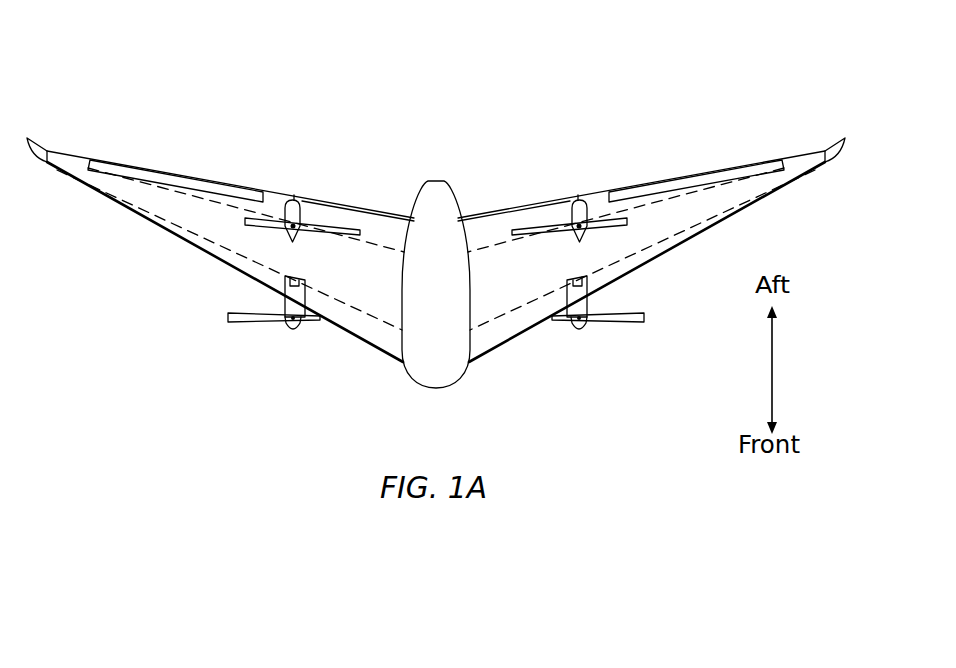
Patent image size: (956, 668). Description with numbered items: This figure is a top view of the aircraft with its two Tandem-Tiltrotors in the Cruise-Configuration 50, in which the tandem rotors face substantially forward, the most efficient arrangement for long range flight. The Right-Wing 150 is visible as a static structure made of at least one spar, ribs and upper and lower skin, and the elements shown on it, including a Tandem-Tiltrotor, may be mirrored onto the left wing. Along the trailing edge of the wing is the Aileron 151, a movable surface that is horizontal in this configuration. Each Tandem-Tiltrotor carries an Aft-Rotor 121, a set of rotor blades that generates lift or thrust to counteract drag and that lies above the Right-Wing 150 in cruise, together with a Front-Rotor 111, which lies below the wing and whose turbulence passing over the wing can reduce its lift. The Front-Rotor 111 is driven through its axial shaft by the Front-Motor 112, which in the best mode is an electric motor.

The Cruise-Configuration 50 is at (249, 63).
The Right-Wing 150 is at (153, 198).
The Aileron 151 is at (163, 171).
The Aft-Rotor 121 is at (345, 230).
The Front-Motor 112 is at (285, 303).
The Front-Rotor 111 is at (250, 322).